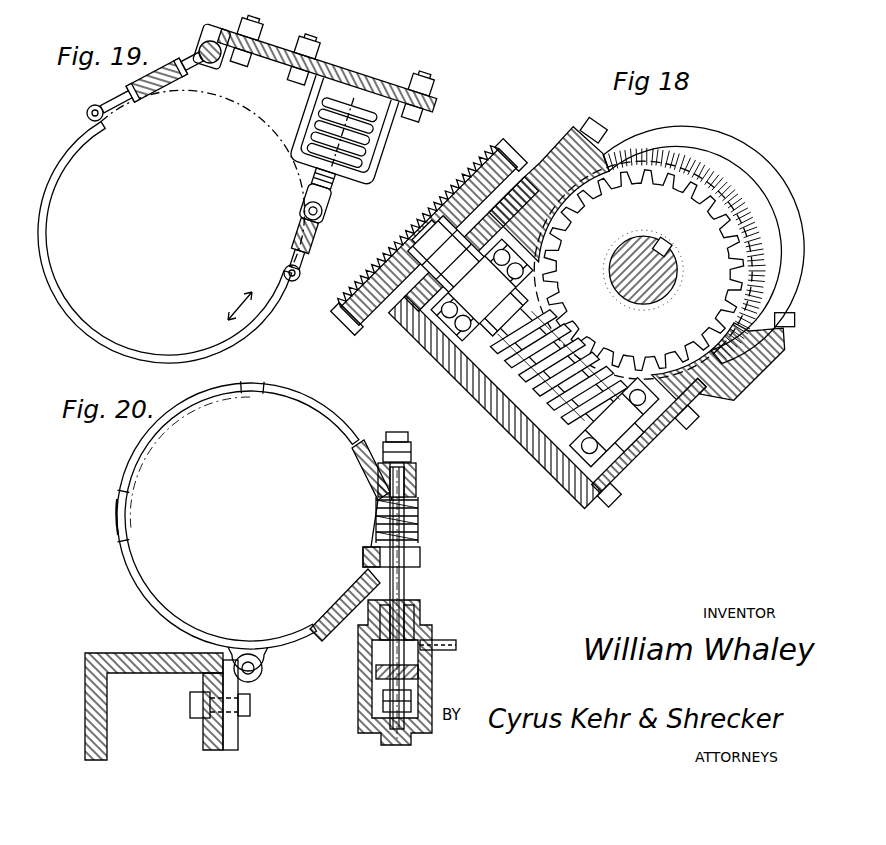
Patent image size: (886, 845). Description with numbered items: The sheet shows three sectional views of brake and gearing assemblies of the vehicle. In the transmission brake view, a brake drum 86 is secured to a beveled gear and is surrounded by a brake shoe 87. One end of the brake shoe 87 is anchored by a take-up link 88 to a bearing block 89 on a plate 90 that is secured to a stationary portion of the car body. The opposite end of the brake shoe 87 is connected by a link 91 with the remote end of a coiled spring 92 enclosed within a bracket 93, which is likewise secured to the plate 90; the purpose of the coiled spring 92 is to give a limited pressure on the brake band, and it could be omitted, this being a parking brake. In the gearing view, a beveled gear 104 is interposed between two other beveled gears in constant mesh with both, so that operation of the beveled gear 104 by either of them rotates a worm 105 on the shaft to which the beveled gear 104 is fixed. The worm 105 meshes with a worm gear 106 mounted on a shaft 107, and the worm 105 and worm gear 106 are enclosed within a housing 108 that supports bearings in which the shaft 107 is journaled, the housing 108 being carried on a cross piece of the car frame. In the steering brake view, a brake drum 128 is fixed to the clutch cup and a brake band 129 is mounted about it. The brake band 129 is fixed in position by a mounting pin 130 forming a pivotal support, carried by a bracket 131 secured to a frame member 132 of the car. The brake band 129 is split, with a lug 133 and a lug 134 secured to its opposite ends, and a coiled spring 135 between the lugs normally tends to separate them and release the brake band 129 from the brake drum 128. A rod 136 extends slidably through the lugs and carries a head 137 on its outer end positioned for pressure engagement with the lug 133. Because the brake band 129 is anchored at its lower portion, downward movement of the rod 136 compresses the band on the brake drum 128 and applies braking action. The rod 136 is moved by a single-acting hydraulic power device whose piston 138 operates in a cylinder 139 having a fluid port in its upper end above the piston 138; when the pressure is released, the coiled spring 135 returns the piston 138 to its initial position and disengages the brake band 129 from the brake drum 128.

In FIG. 19, the brake drum 86 is at (244, 133).
In FIG. 19, the brake shoe 87 is at (86, 333).
In FIG. 19, the take-up link 88 is at (178, 62).
In FIG. 19, the bearing block 89 is at (211, 33).
In FIG. 19, the plate 90 is at (357, 80).
In FIG. 19, the link 91 is at (319, 231).
In FIG. 19, the coiled spring 92 is at (358, 159).
In FIG. 19, the bracket 93 is at (368, 183).
In FIG. 18, the beveled gear 104 is at (497, 155).
In FIG. 18, the worm 105 is at (525, 436).
In FIG. 18, the worm gear 106 is at (724, 197).
In FIG. 18, the shaft 107 is at (645, 240).
In FIG. 18, the housing 108 is at (700, 142).
In FIG. 20, the brake drum 128 is at (262, 386).
In FIG. 20, the brake band 129 is at (116, 511).
In FIG. 20, the mounting pin 130 is at (263, 676).
In FIG. 20, the bracket 131 is at (239, 744).
In FIG. 20, the frame member 132 is at (86, 662).
In FIG. 20, the lug 133 is at (414, 484).
In FIG. 20, the lug 134 is at (419, 578).
In FIG. 20, the coiled spring 135 is at (405, 527).
In FIG. 20, the rod 136 is at (421, 594).
In FIG. 20, the head 137 is at (406, 452).
In FIG. 20, the piston 138 is at (432, 669).
In FIG. 20, the cylinder 139 is at (430, 696).